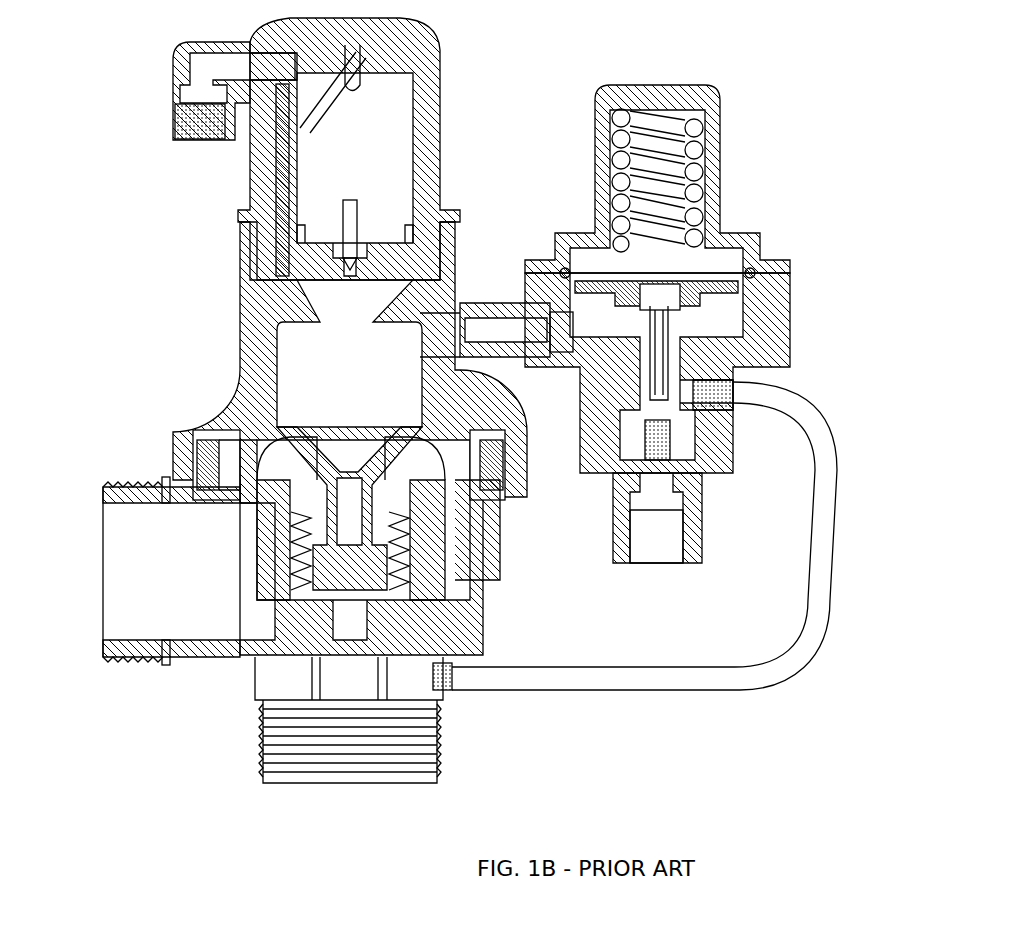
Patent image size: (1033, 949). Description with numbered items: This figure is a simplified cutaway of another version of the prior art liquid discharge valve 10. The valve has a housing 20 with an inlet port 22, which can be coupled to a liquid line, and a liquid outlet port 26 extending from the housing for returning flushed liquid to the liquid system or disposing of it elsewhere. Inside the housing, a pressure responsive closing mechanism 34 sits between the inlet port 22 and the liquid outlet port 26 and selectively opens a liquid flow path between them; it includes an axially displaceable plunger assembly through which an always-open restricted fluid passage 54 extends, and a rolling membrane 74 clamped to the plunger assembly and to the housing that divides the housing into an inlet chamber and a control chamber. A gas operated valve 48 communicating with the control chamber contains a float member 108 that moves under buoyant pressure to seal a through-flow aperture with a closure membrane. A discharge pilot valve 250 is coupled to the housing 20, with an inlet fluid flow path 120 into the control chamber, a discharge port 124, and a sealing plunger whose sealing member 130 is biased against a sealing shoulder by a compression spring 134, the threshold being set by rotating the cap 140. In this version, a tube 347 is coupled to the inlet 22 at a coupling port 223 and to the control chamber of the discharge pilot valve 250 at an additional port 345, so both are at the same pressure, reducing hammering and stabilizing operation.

The liquid discharge valve 10 is at (196, 278).
The housing 20 is at (315, 497).
The inlet port 22 is at (290, 783).
The liquid outlet port 26 is at (143, 620).
The pressure responsive closing mechanism 34 is at (480, 548).
The gas operated valve 48 is at (250, 180).
The restricted fluid passage 54 is at (345, 600).
The rolling membrane 74 is at (245, 542).
The float member 108 is at (400, 120).
The inlet fluid flow path 120 is at (497, 333).
The discharge port 124 is at (664, 562).
The sealing member 130 is at (671, 345).
The compression spring 134 is at (610, 140).
The cap 140 is at (713, 130).
The coupling port 223 is at (452, 692).
The discharge pilot valve 250 is at (719, 508).
The additional port 345 is at (722, 476).
The tube 347 is at (687, 692).